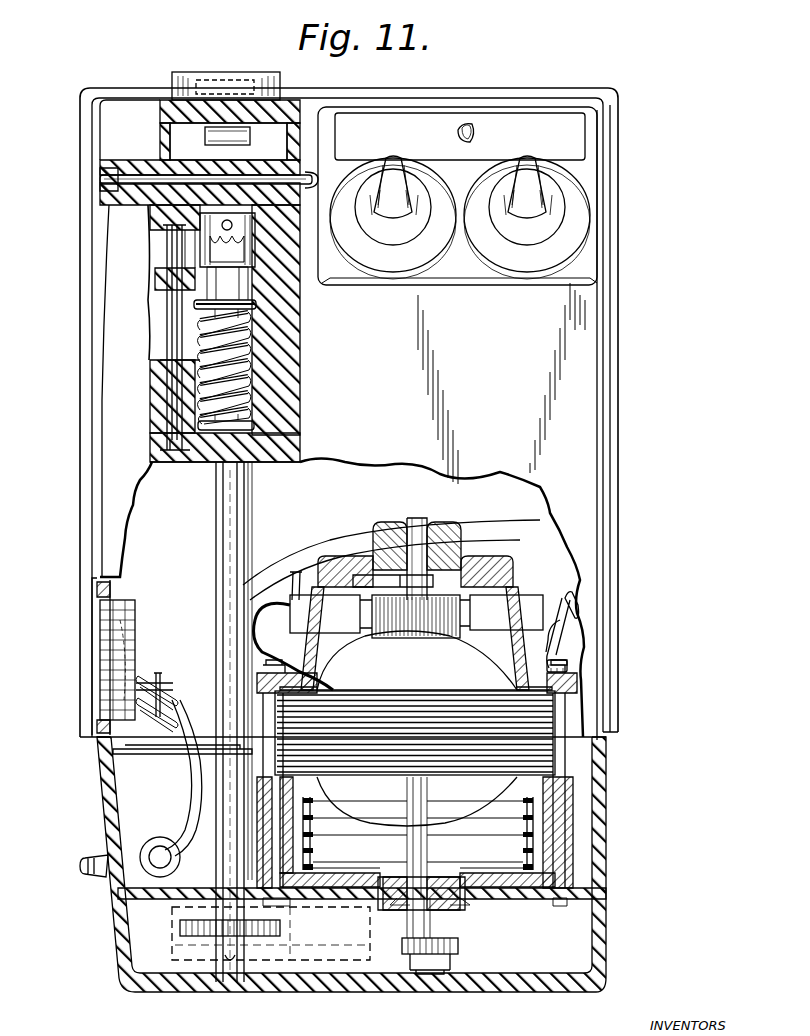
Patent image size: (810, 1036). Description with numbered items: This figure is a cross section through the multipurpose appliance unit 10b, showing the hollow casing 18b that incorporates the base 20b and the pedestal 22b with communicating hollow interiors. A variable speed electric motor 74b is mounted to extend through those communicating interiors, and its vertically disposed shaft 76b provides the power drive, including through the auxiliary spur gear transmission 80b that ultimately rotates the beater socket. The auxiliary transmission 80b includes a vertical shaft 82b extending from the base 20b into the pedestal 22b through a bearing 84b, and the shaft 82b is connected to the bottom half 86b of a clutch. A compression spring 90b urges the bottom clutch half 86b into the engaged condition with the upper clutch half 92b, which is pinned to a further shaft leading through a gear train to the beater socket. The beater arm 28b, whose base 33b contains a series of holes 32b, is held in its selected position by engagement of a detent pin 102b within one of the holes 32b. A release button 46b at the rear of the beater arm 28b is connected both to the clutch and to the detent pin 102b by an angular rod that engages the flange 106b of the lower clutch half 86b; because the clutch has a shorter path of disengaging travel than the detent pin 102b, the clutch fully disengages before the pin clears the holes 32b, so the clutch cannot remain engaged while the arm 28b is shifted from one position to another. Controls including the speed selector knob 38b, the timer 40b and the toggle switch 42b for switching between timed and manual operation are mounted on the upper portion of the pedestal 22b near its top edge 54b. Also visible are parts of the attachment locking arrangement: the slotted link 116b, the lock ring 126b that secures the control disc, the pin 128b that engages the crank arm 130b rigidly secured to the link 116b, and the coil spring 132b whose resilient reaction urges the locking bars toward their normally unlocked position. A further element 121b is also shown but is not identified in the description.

The multipurpose appliance unit 10b is at (628, 370).
The hollow casing 18b is at (500, 472).
The base 20b is at (598, 762).
The pedestal 22b is at (600, 657).
The beater arm 28b is at (158, 96).
The holes 32b is at (175, 236).
The base of beater arm 33b is at (150, 203).
The speed selector knob 38b is at (378, 178).
The timer 40b is at (548, 185).
The toggle switch 42b is at (470, 124).
The release button 46b is at (258, 72).
The top edge of pedestal 54b is at (618, 92).
The variable speed electric motor 74b is at (540, 760).
The motor shaft 76b is at (430, 984).
The auxiliary spur gear transmission 80b is at (246, 524).
The vertical shaft 82b is at (226, 482).
The bearing 84b is at (248, 442).
The bottom half of clutch 86b is at (248, 300).
The compression spring 90b is at (262, 335).
The upper clutch half 92b is at (200, 238).
The detent pin 102b is at (170, 338).
The flange 106b is at (256, 306).
The slotted link 116b is at (247, 749).
The ratchet gear 121b is at (118, 622).
The lock ring 126b is at (110, 592).
The pin 128b is at (145, 683).
The crank arm 130b is at (152, 748).
The coil spring 132b is at (160, 690).